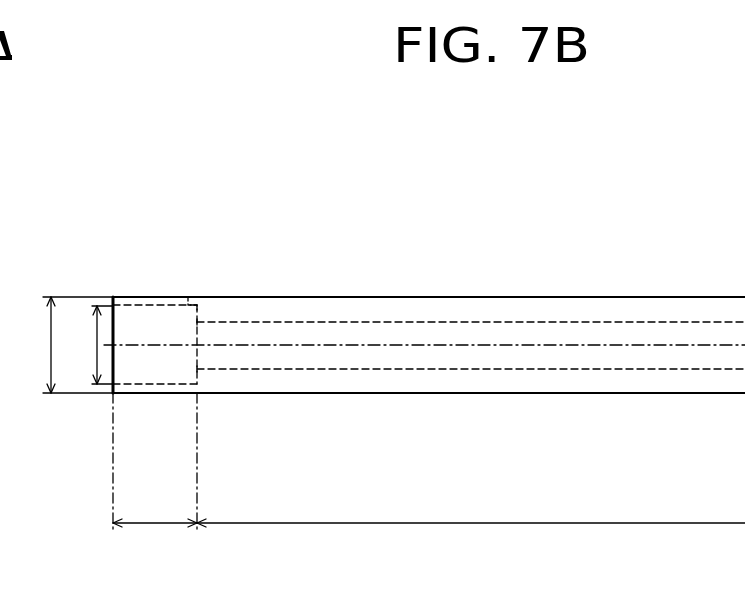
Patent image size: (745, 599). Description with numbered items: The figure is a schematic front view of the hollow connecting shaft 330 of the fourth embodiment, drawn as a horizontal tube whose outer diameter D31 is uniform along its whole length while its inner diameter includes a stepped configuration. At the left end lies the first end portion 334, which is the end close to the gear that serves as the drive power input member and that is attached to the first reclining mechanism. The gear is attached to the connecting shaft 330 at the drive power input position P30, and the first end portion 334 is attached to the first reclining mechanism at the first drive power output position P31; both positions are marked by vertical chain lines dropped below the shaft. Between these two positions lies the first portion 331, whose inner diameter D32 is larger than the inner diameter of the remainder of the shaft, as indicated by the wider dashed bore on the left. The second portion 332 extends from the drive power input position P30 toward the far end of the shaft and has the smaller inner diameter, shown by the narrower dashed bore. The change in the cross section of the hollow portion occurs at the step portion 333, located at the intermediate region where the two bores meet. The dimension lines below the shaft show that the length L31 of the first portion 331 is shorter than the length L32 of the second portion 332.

The connecting shaft 330 is at (462, 270).
The first portion 331 is at (160, 394).
The second portion 332 is at (563, 395).
The step portion 333 is at (188, 290).
The first end portion 334 is at (131, 297).
The outer diameter D31 is at (62, 345).
The inner diameter D32 is at (85, 345).
The length L31 is at (155, 509).
The length L32 is at (471, 509).
The first drive power output position P31 is at (115, 477).
The drive power input position P30 is at (200, 477).